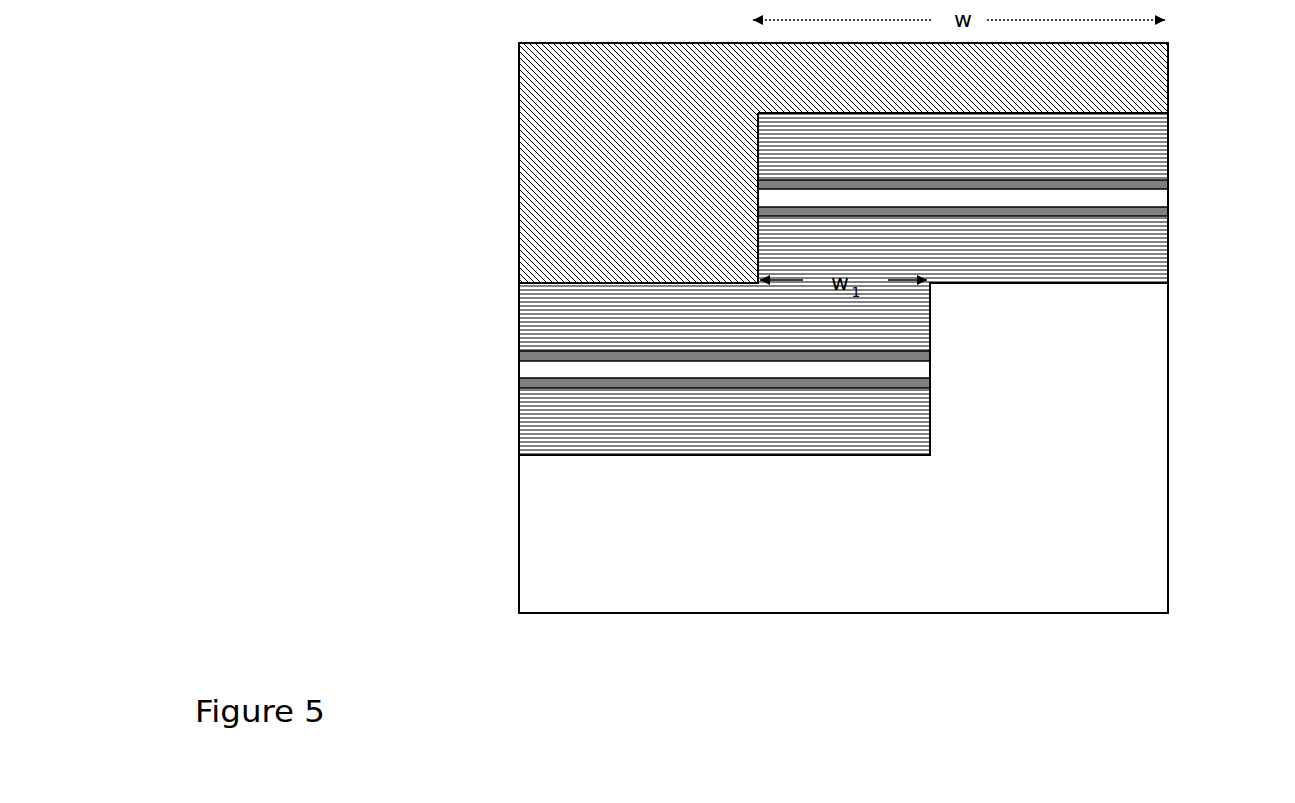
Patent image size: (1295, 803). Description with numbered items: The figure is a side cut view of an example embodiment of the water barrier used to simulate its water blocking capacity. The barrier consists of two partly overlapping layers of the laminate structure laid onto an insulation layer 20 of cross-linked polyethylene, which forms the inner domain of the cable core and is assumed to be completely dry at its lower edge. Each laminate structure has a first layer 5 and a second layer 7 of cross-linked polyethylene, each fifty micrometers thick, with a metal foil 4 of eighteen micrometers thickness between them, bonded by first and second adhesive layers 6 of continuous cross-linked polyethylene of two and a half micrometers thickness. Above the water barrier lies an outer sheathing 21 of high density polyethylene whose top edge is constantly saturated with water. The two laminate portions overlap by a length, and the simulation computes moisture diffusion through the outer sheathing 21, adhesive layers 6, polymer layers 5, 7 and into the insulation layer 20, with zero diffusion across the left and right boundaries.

The metal foil 4 is at (1108, 199).
The first layer 5 is at (843, 335).
The adhesive layers 6 is at (1169, 212).
The second layer 7 is at (843, 232).
The insulation layer 20 is at (843, 418).
The outer sheathing 21 is at (843, 163).